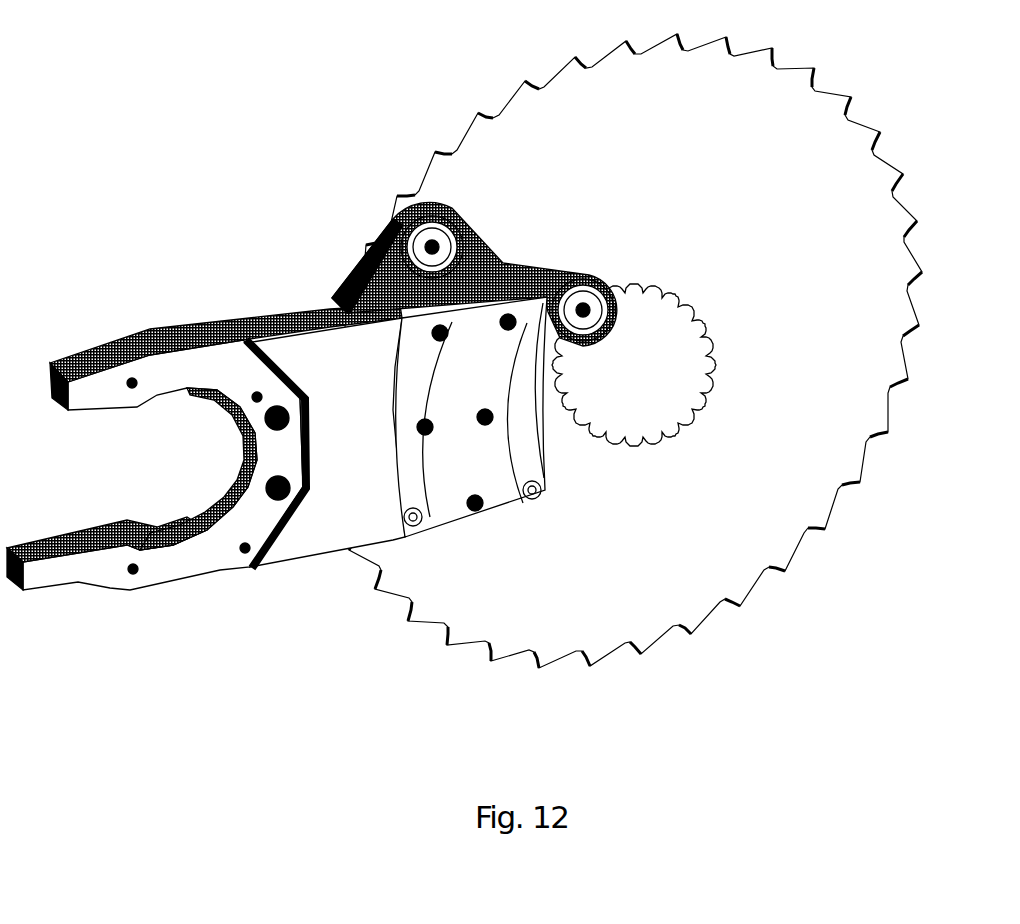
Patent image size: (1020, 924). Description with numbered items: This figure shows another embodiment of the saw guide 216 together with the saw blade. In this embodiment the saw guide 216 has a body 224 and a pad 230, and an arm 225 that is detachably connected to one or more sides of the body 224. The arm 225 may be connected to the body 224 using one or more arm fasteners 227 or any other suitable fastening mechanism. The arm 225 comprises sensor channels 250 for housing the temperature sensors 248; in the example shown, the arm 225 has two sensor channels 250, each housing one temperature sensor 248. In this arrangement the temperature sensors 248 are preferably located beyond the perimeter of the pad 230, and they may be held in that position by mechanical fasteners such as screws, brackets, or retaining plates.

The saw guide 216 is at (193, 313).
The body 224 is at (328, 525).
The arm 225 is at (480, 272).
The arm fasteners 227 is at (371, 264).
The pad 230 is at (498, 498).
The temperature sensors 248 is at (598, 297).
The sensor channels 250 is at (440, 218).